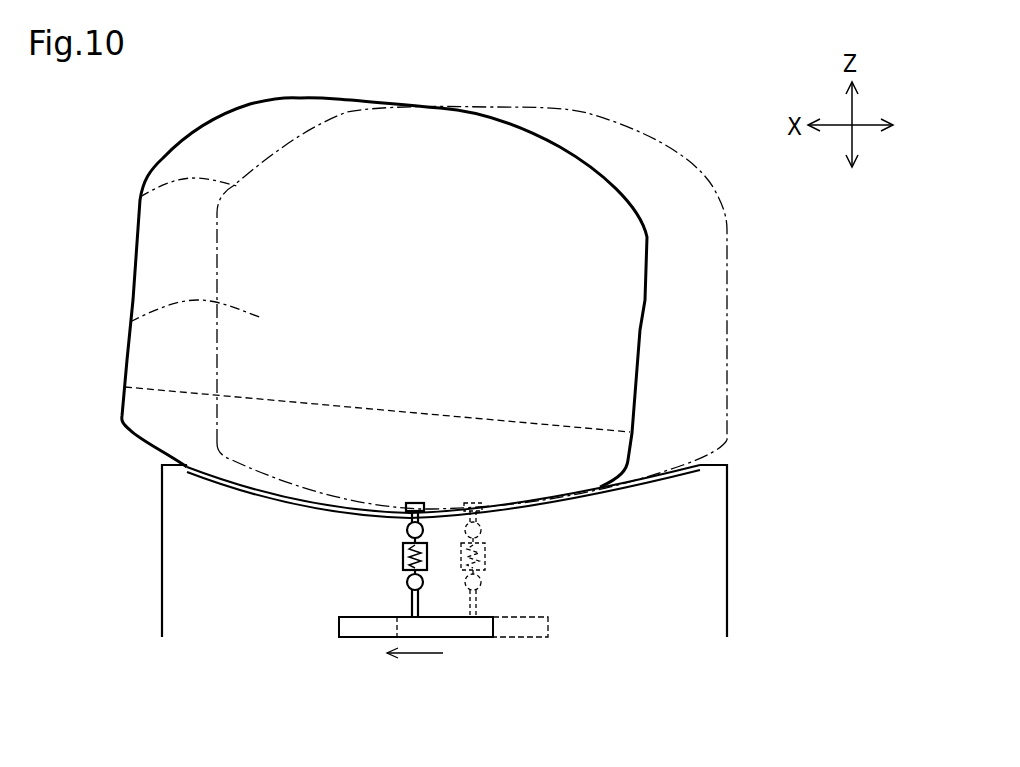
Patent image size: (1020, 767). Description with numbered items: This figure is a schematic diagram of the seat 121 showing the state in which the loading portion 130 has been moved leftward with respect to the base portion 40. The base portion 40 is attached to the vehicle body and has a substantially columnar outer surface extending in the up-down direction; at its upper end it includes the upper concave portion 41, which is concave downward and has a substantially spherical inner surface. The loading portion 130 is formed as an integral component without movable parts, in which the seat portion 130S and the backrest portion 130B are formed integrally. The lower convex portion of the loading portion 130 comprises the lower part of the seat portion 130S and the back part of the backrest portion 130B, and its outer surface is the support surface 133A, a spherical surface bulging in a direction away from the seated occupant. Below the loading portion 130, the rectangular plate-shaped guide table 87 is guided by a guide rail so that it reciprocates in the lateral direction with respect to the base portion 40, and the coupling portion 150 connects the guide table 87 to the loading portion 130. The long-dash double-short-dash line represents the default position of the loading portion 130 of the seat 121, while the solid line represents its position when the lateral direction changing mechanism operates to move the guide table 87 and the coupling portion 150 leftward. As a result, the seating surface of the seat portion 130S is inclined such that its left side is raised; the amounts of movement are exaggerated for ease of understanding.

The loading portion 130 is at (137, 232).
The backrest portion 130B is at (157, 342).
The seat portion 130S is at (402, 412).
The support surface 133A is at (220, 478).
The seat 121 is at (760, 270).
The base portion 40 is at (727, 500).
The upper concave portion 41 is at (683, 472).
The coupling portion 150 is at (403, 548).
The guide table 87 is at (339, 620).